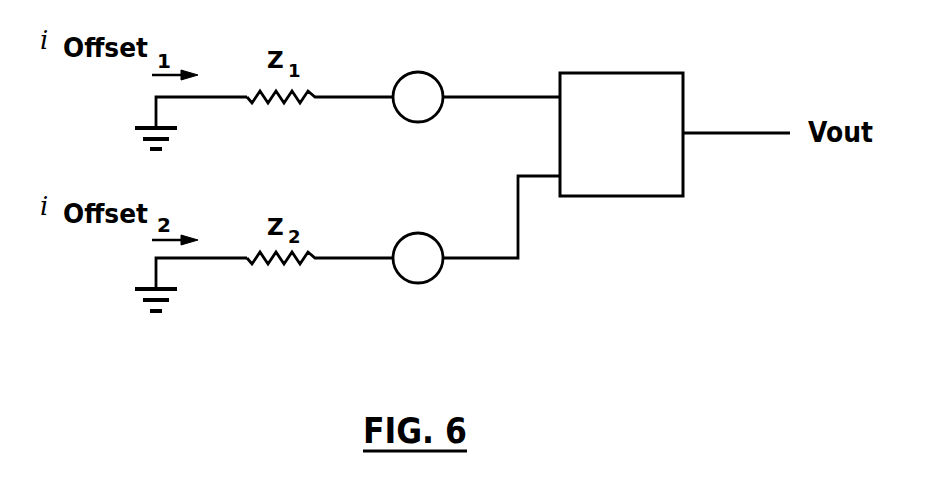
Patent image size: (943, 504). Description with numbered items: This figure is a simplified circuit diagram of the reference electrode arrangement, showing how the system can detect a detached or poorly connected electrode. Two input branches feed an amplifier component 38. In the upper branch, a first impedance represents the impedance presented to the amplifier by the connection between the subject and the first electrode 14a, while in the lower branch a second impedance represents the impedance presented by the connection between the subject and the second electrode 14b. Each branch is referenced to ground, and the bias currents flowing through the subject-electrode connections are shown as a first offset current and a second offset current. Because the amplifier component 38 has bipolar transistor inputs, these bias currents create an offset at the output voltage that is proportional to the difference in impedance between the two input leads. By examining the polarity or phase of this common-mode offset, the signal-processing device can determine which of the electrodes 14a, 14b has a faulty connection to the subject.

The amplifier component 38 is at (632, 151).
The first electrode 14a is at (418, 72).
The second electrode 14b is at (418, 283).